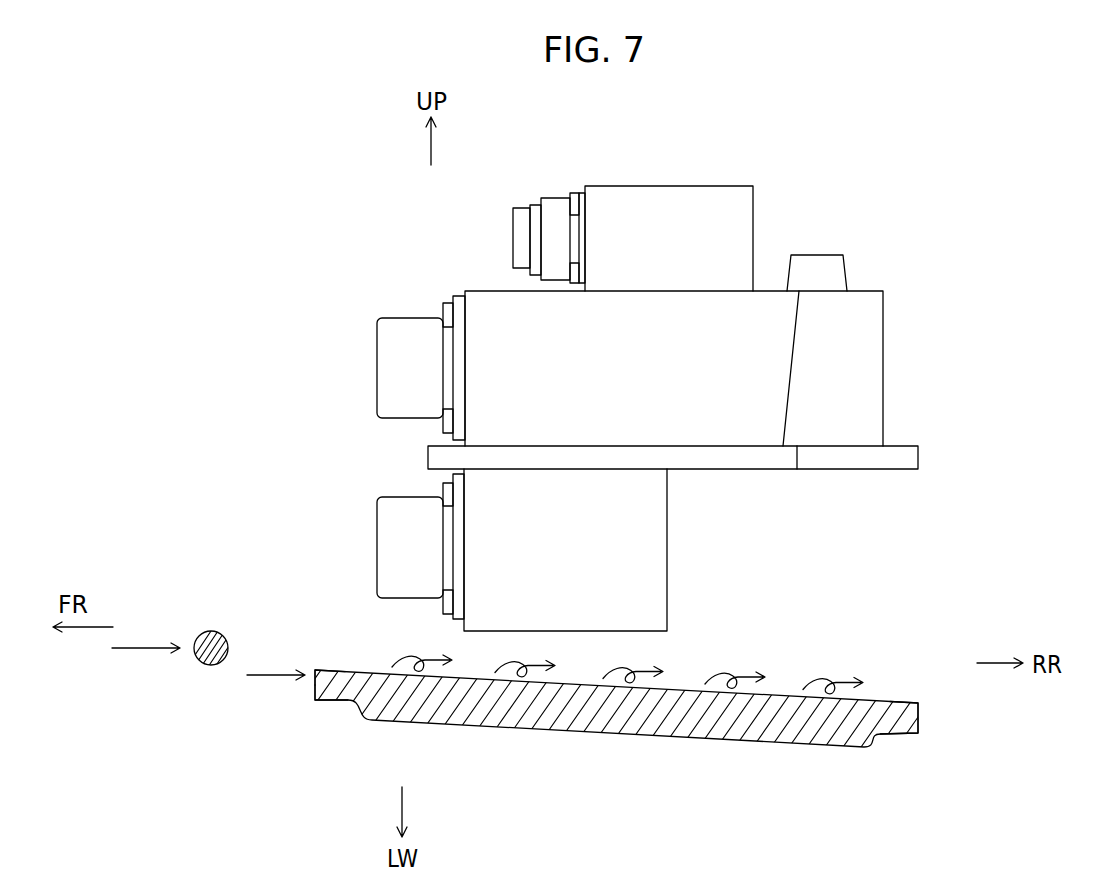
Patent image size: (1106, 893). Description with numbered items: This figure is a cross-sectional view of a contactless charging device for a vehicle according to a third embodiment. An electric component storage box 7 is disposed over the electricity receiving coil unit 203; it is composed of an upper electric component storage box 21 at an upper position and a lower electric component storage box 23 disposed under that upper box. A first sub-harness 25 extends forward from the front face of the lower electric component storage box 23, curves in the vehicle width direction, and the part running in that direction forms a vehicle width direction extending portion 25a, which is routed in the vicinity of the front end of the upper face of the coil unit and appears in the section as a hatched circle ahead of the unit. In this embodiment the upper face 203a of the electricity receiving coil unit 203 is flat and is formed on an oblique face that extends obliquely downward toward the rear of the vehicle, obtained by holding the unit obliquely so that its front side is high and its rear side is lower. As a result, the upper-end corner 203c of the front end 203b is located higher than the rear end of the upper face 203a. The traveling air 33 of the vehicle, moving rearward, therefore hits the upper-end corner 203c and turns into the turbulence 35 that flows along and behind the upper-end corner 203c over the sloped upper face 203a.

The electric component storage box 7 is at (898, 402).
The upper electric component storage box 21 is at (863, 331).
The lower electric component storage box 23 is at (653, 540).
The traveling air 33 is at (147, 645).
The turbulence 35 is at (830, 680).
The first sub-harness 25 is at (219, 678).
The vehicle width direction extending portion 25a is at (205, 665).
The electricity receiving coil unit 203 is at (834, 758).
The upper face 203a is at (898, 698).
The front end 203b is at (312, 692).
The upper-end corner 203c is at (317, 670).